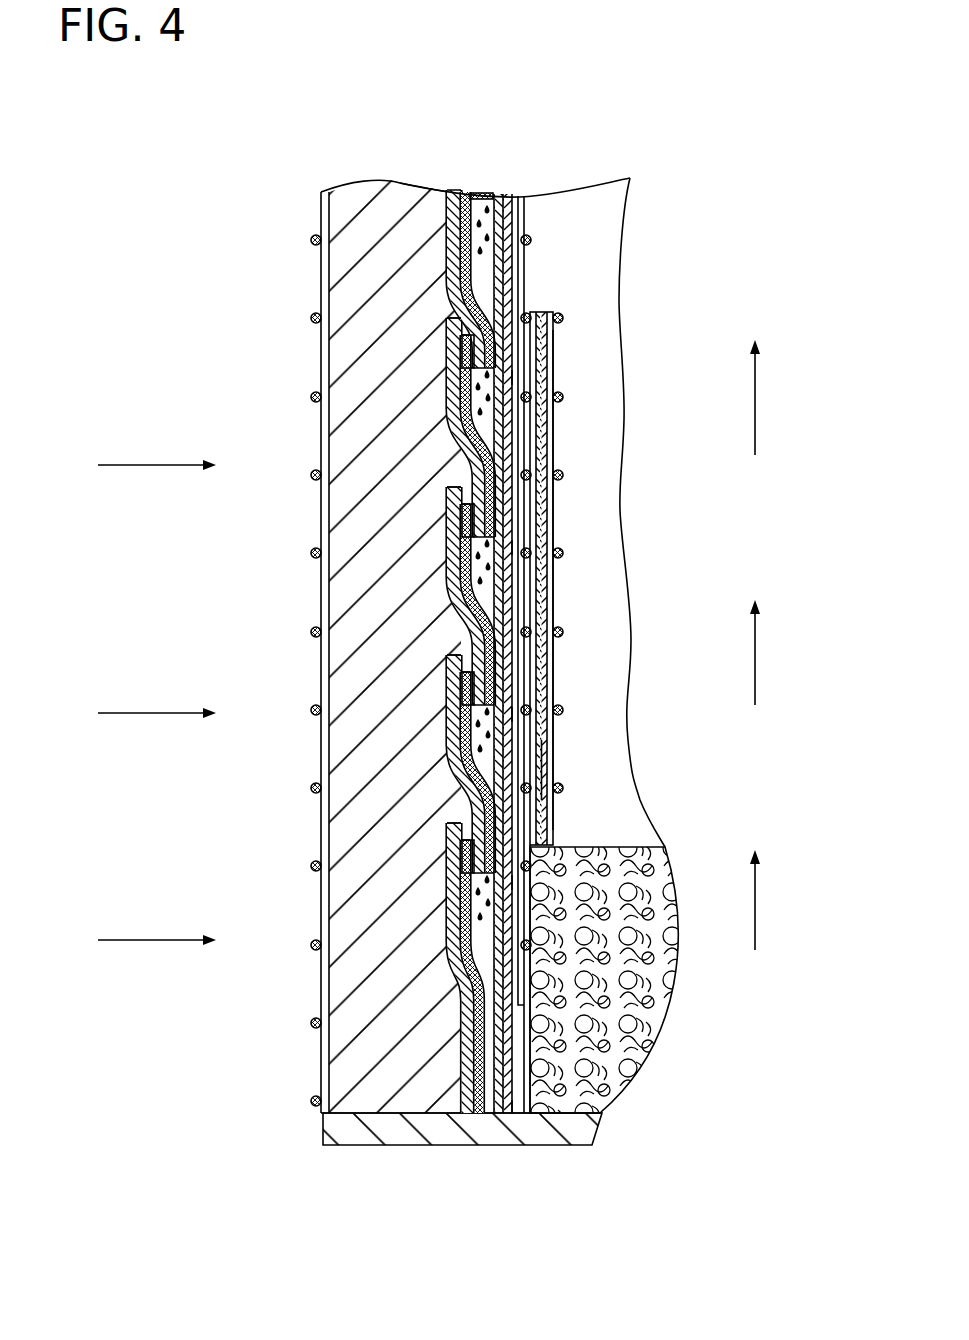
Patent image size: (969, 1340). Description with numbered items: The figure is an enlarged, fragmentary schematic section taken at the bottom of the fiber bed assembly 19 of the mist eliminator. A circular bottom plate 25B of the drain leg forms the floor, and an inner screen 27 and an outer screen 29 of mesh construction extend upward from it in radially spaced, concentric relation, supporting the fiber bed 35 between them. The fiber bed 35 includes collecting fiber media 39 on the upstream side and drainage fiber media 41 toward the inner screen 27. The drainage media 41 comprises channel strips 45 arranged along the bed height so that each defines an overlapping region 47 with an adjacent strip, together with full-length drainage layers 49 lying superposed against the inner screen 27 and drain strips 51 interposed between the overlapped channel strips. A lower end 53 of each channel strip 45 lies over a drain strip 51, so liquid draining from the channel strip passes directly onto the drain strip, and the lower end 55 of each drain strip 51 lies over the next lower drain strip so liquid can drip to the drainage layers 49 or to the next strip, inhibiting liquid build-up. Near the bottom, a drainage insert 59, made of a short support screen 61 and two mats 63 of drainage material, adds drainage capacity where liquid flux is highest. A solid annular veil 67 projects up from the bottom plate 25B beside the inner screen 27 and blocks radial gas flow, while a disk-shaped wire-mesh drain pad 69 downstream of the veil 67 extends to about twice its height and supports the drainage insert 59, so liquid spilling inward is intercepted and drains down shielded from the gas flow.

The fiber bed assembly 19 is at (807, 96).
The bottom plate 25B is at (355, 1146).
The inner screen 27 is at (534, 212).
The outer screen 29 is at (316, 1079).
The fiber bed 35 is at (433, 118).
The collecting fiber media 39 is at (354, 186).
The drainage fiber media 41 is at (516, 188).
The channel strips 45 is at (447, 262).
The overlapping regions 47 is at (445, 322).
The drainage layers 49 is at (487, 192).
The drain strips 51 is at (447, 204).
The lower end of channel strip 53 is at (452, 398).
The lower end of drain strip 55 is at (497, 380).
The drainage insert 59 is at (590, 322).
The support screen 61 is at (555, 427).
The mats 63 is at (590, 778).
The veil 67 is at (518, 1110).
The drain pad 69 is at (655, 975).